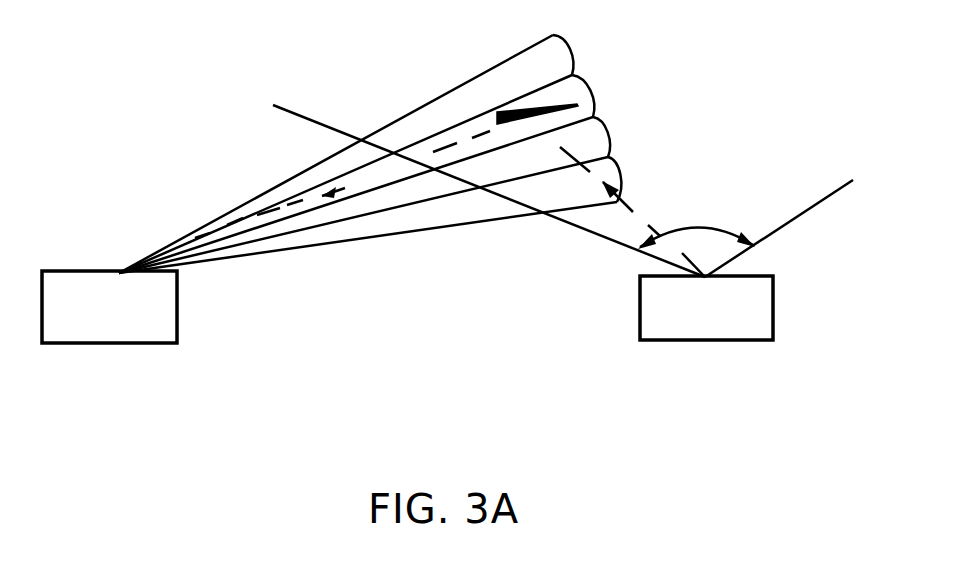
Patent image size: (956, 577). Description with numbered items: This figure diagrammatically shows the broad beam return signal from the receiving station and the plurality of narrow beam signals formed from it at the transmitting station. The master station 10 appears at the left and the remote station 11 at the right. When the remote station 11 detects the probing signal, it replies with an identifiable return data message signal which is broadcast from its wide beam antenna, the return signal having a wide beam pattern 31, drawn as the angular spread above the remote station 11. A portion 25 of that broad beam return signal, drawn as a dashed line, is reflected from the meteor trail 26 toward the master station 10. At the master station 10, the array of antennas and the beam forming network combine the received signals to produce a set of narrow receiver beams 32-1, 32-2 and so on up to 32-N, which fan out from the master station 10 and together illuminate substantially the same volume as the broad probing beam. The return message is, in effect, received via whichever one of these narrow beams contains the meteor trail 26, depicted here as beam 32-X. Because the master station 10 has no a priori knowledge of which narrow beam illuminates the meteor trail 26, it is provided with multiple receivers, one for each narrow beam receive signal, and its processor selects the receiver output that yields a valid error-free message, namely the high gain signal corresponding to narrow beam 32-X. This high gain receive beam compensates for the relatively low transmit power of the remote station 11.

The master station 10 is at (178, 298).
The remote station 11 is at (640, 308).
The portion of broad beam return signal 25 is at (287, 207).
The meteor trail 26 is at (553, 138).
The wide beam pattern 31 is at (803, 210).
The narrow receiver beam 32-N is at (408, 112).
The narrow receiver beam 32-X is at (446, 146).
The narrow receiver beam 32-2 is at (610, 130).
The narrow receiver beam 32-1 is at (622, 175).